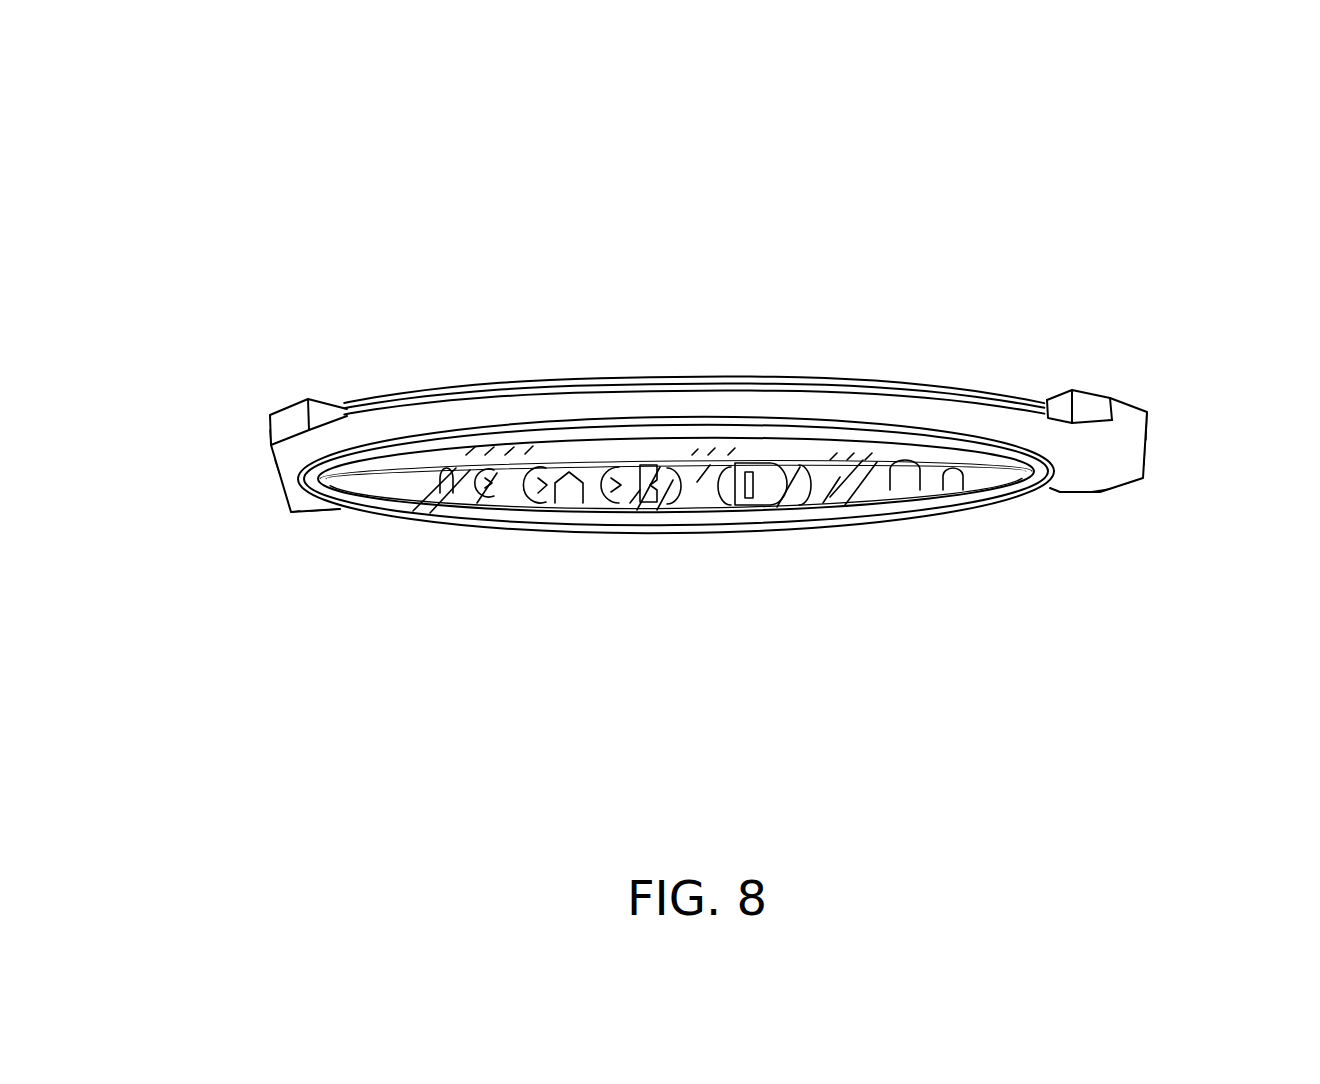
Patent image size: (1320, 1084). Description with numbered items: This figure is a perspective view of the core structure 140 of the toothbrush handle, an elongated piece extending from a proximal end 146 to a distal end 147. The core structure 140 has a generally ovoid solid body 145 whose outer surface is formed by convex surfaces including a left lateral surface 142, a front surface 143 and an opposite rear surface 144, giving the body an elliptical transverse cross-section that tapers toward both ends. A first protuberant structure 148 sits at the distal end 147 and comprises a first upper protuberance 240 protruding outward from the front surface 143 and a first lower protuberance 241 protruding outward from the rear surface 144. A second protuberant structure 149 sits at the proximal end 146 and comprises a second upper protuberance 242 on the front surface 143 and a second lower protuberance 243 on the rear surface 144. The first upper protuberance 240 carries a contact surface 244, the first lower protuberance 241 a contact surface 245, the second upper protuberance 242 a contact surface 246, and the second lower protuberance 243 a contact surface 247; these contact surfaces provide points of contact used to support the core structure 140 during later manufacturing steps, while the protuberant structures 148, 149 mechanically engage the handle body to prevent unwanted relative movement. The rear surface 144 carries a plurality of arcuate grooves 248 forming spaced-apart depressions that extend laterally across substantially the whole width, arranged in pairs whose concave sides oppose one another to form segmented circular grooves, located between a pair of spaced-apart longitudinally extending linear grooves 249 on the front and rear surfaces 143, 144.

The core structure 140 is at (1114, 169).
The left lateral surface 142 is at (808, 465).
The front surface 143 is at (630, 407).
The rear surface 144 is at (689, 533).
The solid body 145 is at (763, 412).
The proximal end 146 is at (1148, 433).
The distal end 147 is at (268, 458).
The first protuberant structure 148 is at (273, 485).
The second protuberant structure 149 is at (1148, 453).
The first upper protuberance 240 is at (307, 438).
The first lower protuberance 241 is at (311, 509).
The second upper protuberance 242 is at (1042, 436).
The second lower protuberance 243 is at (1102, 480).
The contact surface 244 is at (290, 412).
The contact surface 245 is at (306, 511).
The contact surface 246 is at (1090, 407).
The contact surface 247 is at (1128, 486).
The arcuate grooves 248 is at (538, 494).
The linear grooves 249 is at (503, 424).